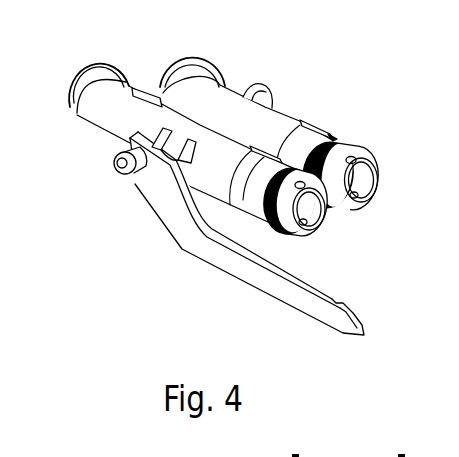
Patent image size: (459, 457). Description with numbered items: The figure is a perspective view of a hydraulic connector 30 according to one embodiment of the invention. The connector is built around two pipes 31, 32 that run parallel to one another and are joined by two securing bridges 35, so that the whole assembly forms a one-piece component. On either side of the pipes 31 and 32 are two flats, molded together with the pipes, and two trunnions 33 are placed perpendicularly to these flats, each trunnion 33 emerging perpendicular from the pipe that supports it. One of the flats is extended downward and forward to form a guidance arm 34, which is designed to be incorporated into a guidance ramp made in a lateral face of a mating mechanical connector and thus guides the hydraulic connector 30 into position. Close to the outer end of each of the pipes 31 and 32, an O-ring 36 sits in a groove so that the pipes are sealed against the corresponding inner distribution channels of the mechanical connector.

The hydraulic connector 30 is at (221, 191).
The pipe 31 is at (117, 120).
The pipe 32 is at (283, 122).
The trunnion 33 is at (255, 88).
The guidance arm 34 is at (253, 285).
The securing bridge 35 is at (142, 88).
The O-ring 36 is at (334, 138).